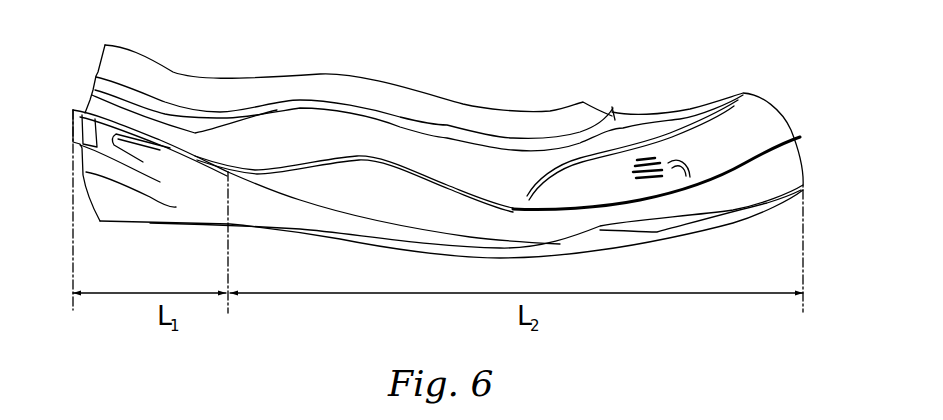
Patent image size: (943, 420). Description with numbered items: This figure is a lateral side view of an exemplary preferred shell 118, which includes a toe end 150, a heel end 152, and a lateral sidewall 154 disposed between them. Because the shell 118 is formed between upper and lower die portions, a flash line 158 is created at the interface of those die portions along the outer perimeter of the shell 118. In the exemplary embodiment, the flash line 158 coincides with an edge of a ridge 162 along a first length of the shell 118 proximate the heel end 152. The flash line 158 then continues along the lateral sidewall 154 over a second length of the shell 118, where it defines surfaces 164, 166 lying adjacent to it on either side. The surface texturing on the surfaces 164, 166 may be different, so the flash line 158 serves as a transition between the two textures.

The shell 118 is at (477, 58).
The toe end 150 is at (732, 133).
The heel end 152 is at (70, 133).
The lateral sidewall 154 is at (417, 89).
The flash line 158 is at (476, 146).
The ridge 162 is at (150, 106).
The surface 164 is at (652, 135).
The surface 166 is at (451, 238).